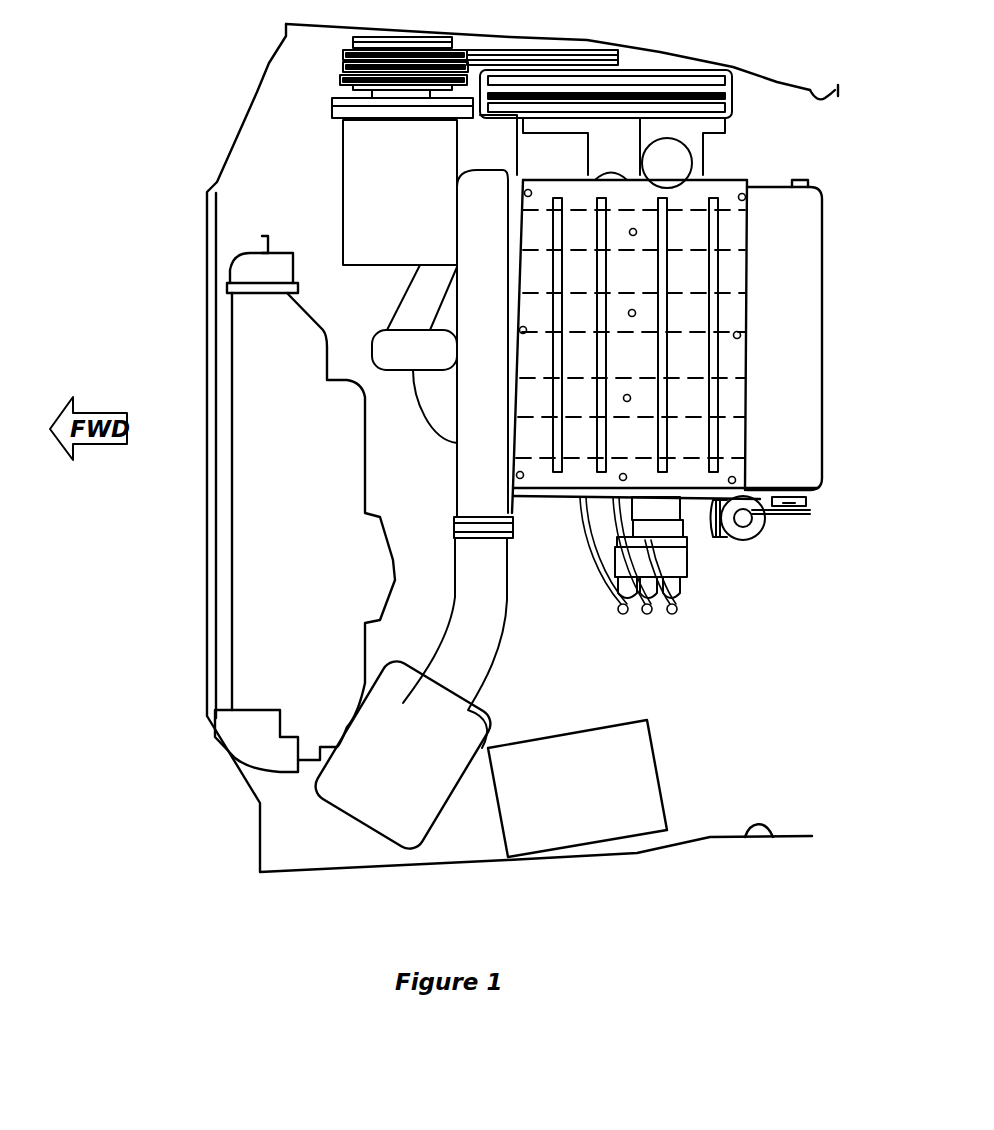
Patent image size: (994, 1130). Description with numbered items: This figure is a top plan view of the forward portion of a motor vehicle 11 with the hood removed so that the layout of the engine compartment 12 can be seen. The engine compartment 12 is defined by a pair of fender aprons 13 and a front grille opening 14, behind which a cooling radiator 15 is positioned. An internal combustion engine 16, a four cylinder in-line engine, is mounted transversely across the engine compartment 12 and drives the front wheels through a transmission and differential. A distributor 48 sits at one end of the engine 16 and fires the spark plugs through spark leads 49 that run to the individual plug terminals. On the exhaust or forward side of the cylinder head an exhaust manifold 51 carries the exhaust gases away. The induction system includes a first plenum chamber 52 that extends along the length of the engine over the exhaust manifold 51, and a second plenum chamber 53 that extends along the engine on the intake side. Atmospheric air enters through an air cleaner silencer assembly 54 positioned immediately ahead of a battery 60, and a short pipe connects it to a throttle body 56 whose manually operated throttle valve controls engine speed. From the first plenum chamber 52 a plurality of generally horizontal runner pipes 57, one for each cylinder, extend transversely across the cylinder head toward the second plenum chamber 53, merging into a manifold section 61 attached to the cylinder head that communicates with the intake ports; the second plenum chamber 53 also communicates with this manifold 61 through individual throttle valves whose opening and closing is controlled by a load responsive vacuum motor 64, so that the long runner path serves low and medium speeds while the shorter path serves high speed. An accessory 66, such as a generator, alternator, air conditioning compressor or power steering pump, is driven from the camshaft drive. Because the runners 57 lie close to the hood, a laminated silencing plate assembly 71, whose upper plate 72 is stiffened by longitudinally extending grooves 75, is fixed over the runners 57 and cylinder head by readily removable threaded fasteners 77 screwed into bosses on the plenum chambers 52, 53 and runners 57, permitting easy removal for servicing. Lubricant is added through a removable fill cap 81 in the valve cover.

The motor vehicle 11 is at (258, 91).
The engine compartment 12 is at (573, 657).
The fender aprons 13 is at (833, 90).
The front grille opening 14 is at (200, 504).
The cooling radiator 15 is at (247, 390).
The internal combustion engine 16 is at (746, 118).
The distributor 48 is at (675, 545).
The spark leads 49 is at (613, 543).
The exhaust manifold 51 is at (372, 355).
The first plenum chamber 52 is at (473, 305).
The second plenum chamber 53 is at (483, 658).
The air cleaner silencer assembly 54 is at (400, 823).
The throttle body 56 is at (450, 528).
The runner pipes 57 is at (535, 297).
The battery 60 is at (577, 823).
The manifold section 61 is at (748, 300).
The vacuum motor 64 is at (760, 520).
The accessory 66 is at (355, 172).
The silencing plate assembly 71 is at (618, 202).
The upper plate 72 is at (723, 187).
The longitudinally extending grooves 75 is at (593, 370).
The threaded fasteners 77 is at (633, 236).
The removable fill cap 81 is at (666, 157).